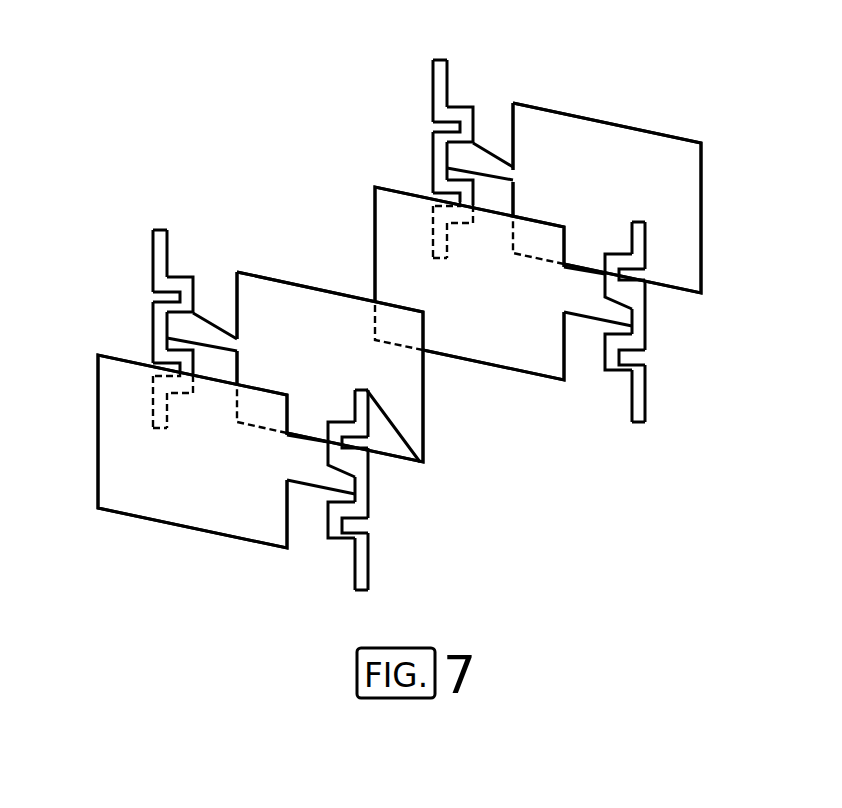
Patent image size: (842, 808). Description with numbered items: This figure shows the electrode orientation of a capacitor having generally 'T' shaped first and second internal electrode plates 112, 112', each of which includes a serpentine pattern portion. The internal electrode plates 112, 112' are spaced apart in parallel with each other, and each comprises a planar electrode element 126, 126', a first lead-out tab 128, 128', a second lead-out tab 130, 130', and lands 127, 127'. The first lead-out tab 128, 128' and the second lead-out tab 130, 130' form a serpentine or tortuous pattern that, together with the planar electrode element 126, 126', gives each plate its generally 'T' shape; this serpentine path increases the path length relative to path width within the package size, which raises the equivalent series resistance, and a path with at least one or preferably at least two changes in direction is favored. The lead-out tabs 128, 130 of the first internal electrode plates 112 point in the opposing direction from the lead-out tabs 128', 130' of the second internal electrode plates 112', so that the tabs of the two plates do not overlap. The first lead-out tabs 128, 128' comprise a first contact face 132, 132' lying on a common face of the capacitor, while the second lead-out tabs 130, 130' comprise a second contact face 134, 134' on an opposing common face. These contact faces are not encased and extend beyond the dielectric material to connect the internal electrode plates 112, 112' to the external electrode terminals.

The first internal electrode plate 112 is at (302, 367).
The second internal electrode plate 112' is at (501, 282).
The planar electrode element 126 is at (331, 380).
The planar electrode element 126' is at (469, 267).
The land 127 is at (498, 406).
The land 127' is at (305, 244).
The first lead-out tab 128 is at (518, 465).
The first lead-out tab 128' is at (285, 267).
The second lead-out tab 130 is at (518, 379).
The second lead-out tab 130' is at (334, 188).
The first contact face 132 is at (473, 493).
The first contact face 132' is at (244, 343).
The second contact face 134 is at (500, 345).
The second contact face 134' is at (271, 120).